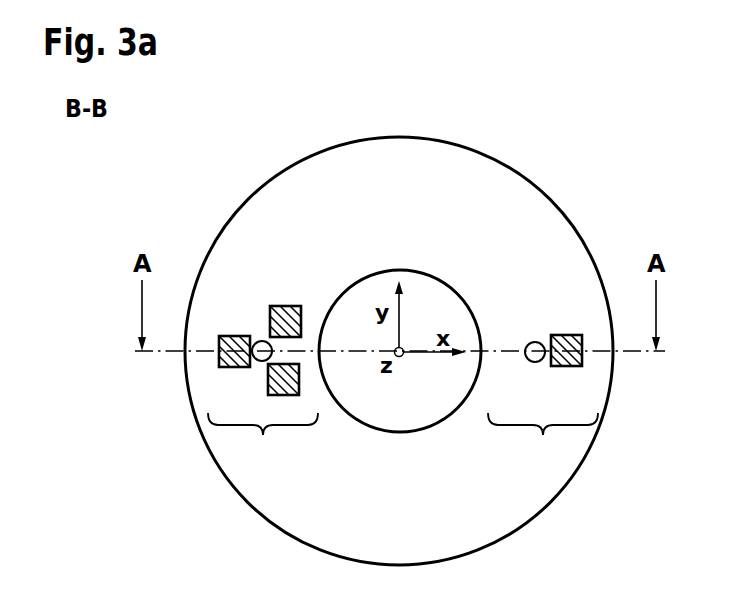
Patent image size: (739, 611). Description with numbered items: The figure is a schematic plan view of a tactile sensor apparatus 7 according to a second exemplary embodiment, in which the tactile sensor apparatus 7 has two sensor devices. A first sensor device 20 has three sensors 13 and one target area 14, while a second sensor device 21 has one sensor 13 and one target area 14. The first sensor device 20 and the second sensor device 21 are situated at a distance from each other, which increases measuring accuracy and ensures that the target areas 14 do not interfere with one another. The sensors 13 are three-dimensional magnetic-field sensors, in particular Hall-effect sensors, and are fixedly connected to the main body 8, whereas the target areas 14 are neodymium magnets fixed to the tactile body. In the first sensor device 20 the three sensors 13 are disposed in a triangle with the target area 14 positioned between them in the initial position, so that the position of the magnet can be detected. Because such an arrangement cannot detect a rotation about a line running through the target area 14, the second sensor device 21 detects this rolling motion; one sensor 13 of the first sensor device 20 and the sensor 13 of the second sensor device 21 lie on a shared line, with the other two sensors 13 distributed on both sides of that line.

The tactile sensor apparatus 7 is at (613, 156).
The main body 8 is at (425, 159).
The sensor 13 is at (226, 336).
The target area 14 is at (262, 341).
The first sensor device 20 is at (263, 421).
The second sensor device 21 is at (543, 421).